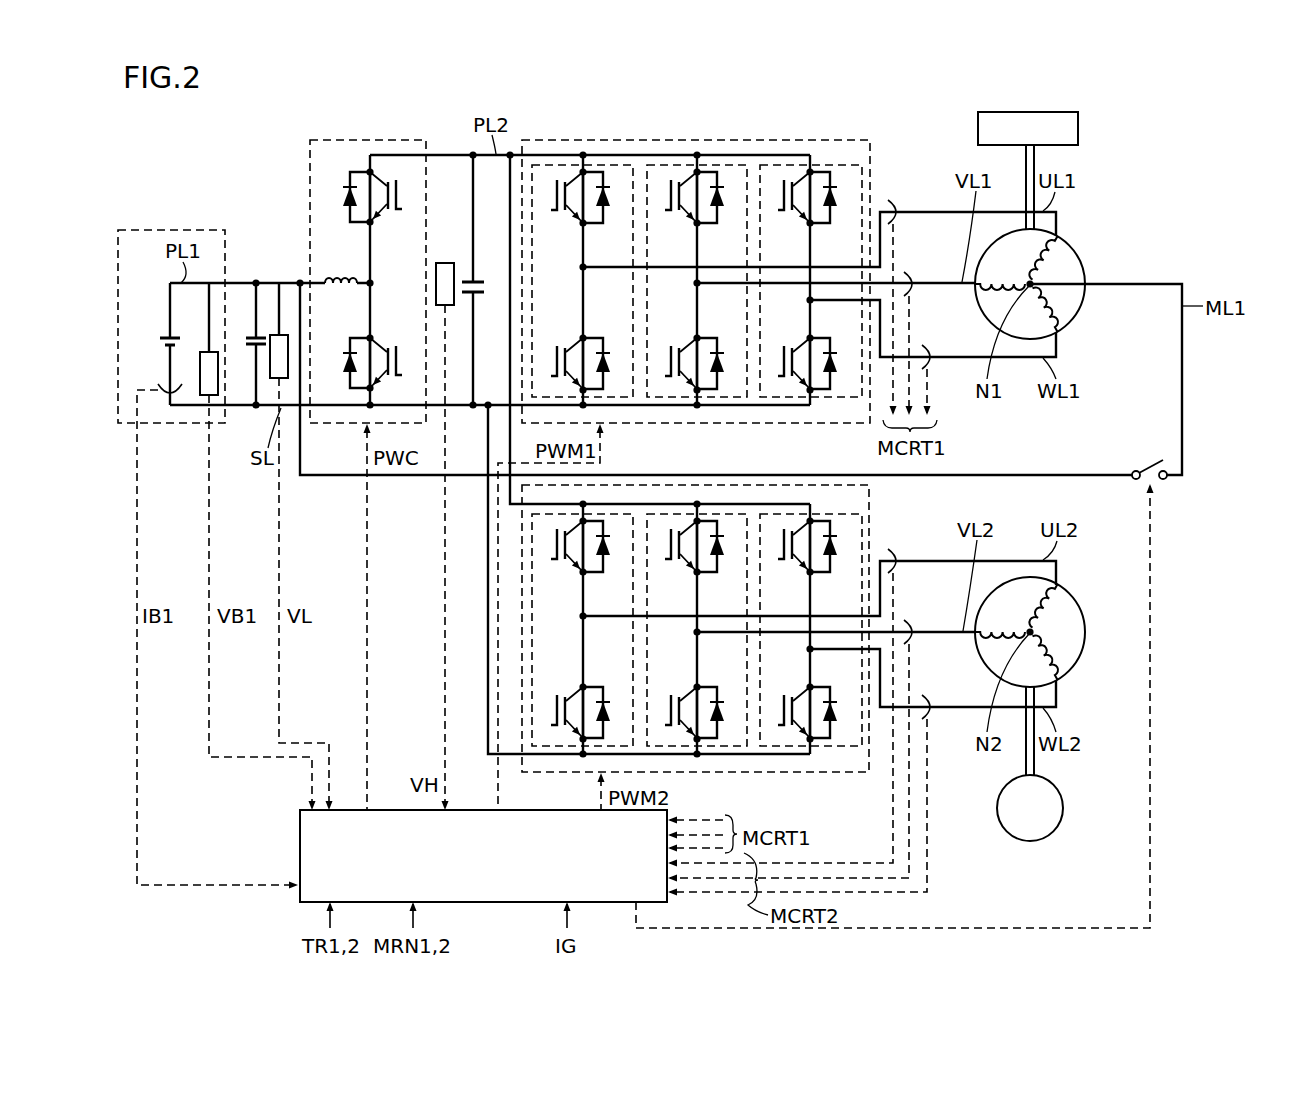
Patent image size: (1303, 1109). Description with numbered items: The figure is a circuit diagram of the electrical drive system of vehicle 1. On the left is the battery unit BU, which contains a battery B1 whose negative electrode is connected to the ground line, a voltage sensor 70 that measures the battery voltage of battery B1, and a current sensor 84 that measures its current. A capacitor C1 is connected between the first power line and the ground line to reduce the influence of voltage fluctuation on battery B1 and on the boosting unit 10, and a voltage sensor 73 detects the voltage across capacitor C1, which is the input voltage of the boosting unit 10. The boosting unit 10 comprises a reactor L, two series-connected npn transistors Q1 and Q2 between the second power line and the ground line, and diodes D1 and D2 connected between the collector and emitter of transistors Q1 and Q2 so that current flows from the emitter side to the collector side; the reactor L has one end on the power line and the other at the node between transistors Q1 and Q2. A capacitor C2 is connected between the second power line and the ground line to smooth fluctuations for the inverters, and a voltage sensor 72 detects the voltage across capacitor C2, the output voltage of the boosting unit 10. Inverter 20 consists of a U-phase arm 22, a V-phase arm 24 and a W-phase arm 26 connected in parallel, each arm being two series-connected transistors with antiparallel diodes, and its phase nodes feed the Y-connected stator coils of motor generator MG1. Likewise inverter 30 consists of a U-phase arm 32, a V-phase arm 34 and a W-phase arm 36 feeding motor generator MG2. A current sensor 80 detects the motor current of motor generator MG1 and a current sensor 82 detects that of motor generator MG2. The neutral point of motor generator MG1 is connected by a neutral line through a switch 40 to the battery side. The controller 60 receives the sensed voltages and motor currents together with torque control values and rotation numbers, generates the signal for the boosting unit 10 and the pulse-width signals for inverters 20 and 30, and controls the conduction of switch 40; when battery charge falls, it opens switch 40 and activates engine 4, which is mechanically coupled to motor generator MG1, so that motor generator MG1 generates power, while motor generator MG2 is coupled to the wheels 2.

The vehicle 1 is at (1292, 141).
The wheels 2 is at (1064, 808).
The engine 4 is at (1079, 127).
The boosting unit 10 is at (368, 305).
The inverter 20 is at (696, 282).
The U-phase arm 22 is at (605, 164).
The V-phase arm 24 is at (717, 164).
The W-phase arm 26 is at (830, 164).
The inverter 30 is at (695, 623).
The U-phase arm 32 is at (612, 513).
The V-phase arm 34 is at (727, 513).
The W-phase arm 36 is at (840, 513).
The switch 40 is at (1153, 466).
The controller 60 is at (386, 809).
The voltage sensor 70 is at (203, 352).
The voltage sensor 72 is at (445, 263).
The voltage sensor 73 is at (281, 335).
The current sensor 80 is at (895, 206).
The current sensor 82 is at (896, 555).
The current sensor 84 is at (180, 400).
The battery unit BU is at (149, 230).
The battery B1 is at (164, 336).
The capacitor C1 is at (252, 337).
The capacitor C2 is at (482, 280).
The reactor L is at (328, 283).
The npn transistor Q1 is at (389, 215).
The npn transistor Q2 is at (389, 350).
The diode D1 is at (345, 213).
The diode D2 is at (347, 360).
The motor generator MG1 is at (1070, 243).
The motor generator MG2 is at (1070, 592).